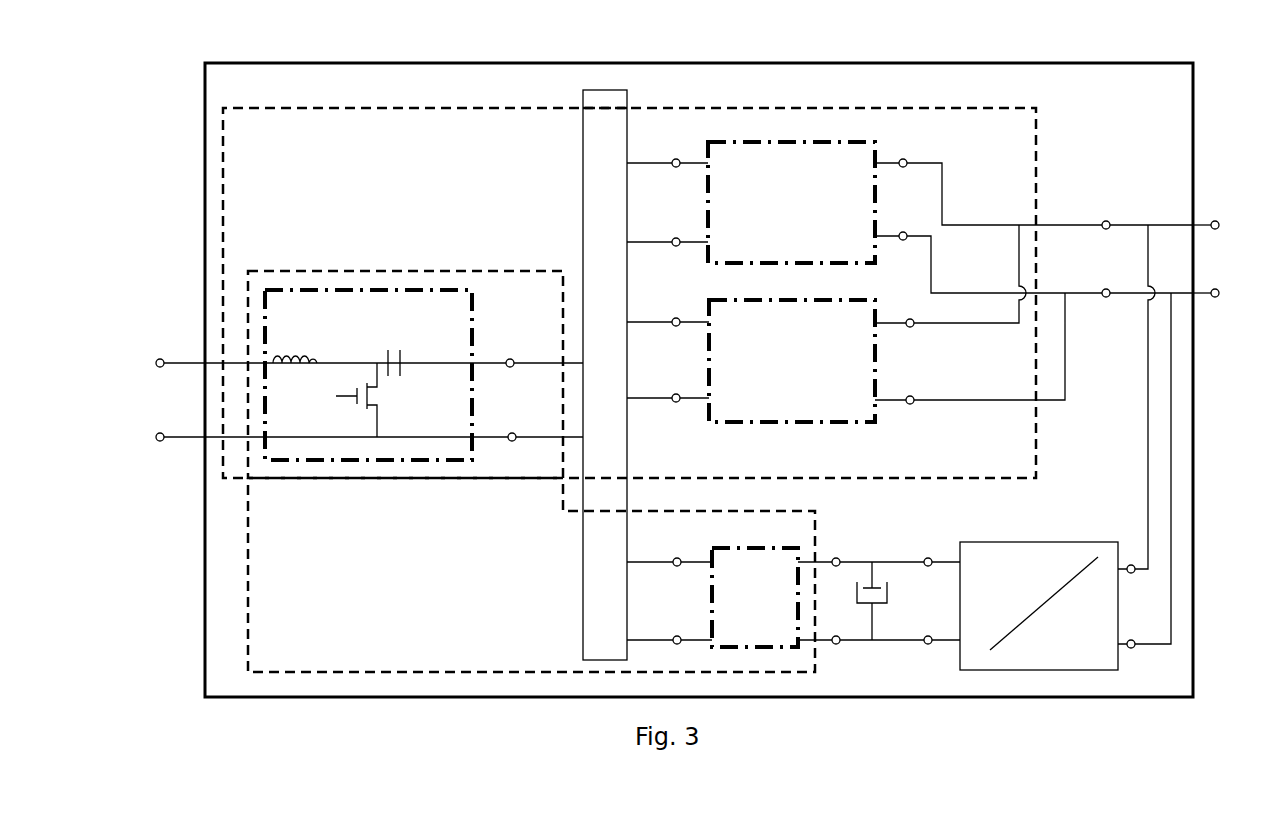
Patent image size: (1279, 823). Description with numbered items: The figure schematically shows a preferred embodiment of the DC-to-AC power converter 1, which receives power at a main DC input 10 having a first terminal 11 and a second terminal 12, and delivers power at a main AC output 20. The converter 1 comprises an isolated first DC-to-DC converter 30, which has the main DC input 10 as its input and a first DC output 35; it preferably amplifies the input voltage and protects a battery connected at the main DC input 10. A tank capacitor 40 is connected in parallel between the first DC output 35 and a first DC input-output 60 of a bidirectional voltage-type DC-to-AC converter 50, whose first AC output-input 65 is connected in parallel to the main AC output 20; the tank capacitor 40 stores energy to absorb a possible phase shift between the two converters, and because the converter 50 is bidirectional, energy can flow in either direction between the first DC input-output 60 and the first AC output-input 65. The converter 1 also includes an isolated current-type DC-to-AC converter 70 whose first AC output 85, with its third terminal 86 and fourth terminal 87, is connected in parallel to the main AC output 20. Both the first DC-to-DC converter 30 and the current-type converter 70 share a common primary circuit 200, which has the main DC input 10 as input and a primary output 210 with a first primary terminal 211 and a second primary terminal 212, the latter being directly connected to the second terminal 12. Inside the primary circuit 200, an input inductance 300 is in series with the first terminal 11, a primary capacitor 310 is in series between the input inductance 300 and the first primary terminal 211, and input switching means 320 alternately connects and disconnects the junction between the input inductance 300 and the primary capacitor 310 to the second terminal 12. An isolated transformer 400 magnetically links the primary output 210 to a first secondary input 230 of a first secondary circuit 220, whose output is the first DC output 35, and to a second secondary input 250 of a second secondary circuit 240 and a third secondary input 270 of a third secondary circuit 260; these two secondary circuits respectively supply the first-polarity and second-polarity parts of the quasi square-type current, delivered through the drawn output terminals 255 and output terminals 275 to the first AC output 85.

The DC-to-AC power converter 1 is at (873, 63).
The main DC input 10 is at (153, 370).
The first terminal 11 is at (160, 345).
The second terminal 12 is at (160, 461).
The main AC output 20 is at (1226, 232).
The first DC-to-DC converter 30 is at (248, 588).
The first DC output 35 is at (879, 601).
The tank capacitor 40 is at (872, 601).
The bidirectional voltage-type DC-to-AC converter 50 is at (1058, 542).
The first DC input-output 60 is at (928, 601).
The first AC output-input 65 is at (1144, 436).
The current-type DC-to-AC converter 70 is at (817, 279).
The first AC output 85 is at (1081, 261).
The third terminal 86 is at (1102, 209).
The fourth terminal 87 is at (1102, 311).
The primary circuit 200 is at (355, 290).
The primary output 210 is at (515, 398).
The first primary terminal 211 is at (510, 345).
The second primary terminal 212 is at (520, 453).
The first secondary circuit 220 is at (755, 597).
The first secondary input 230 is at (669, 601).
The second secondary circuit 240 is at (791, 202).
The second secondary input 250 is at (667, 202).
The first module output terminals 255 is at (1034, 226).
The third secondary circuit 260 is at (792, 361).
The third secondary input 270 is at (668, 360).
The second module output terminals 275 is at (970, 314).
The input inductance 300 is at (298, 343).
The primary capacitor 310 is at (396, 349).
The input switching means 320 is at (332, 400).
The isolated transformer 400 is at (605, 375).